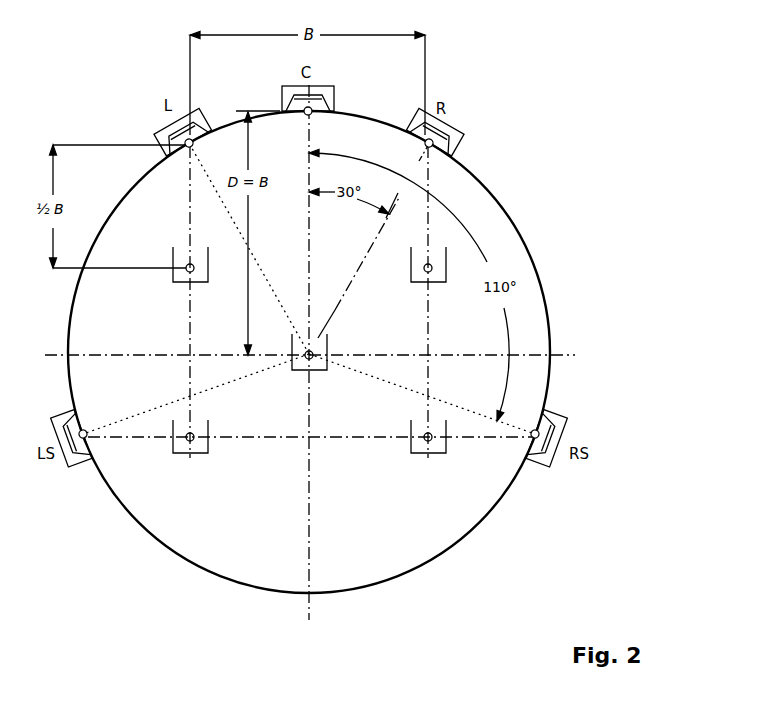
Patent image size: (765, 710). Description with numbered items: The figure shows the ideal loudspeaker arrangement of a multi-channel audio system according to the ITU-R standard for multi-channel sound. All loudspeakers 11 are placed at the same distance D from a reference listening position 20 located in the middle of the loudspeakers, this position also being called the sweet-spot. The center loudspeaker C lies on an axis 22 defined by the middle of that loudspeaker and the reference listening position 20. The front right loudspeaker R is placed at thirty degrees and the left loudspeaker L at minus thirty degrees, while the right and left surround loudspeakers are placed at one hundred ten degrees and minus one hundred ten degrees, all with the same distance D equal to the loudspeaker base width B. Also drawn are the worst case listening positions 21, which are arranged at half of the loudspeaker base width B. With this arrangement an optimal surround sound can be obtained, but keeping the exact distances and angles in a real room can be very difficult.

The loudspeaker 11 is at (455, 133).
The reference listening position 20 is at (327, 341).
The worst case listening position 21 is at (412, 453).
The axis 22 is at (310, 612).